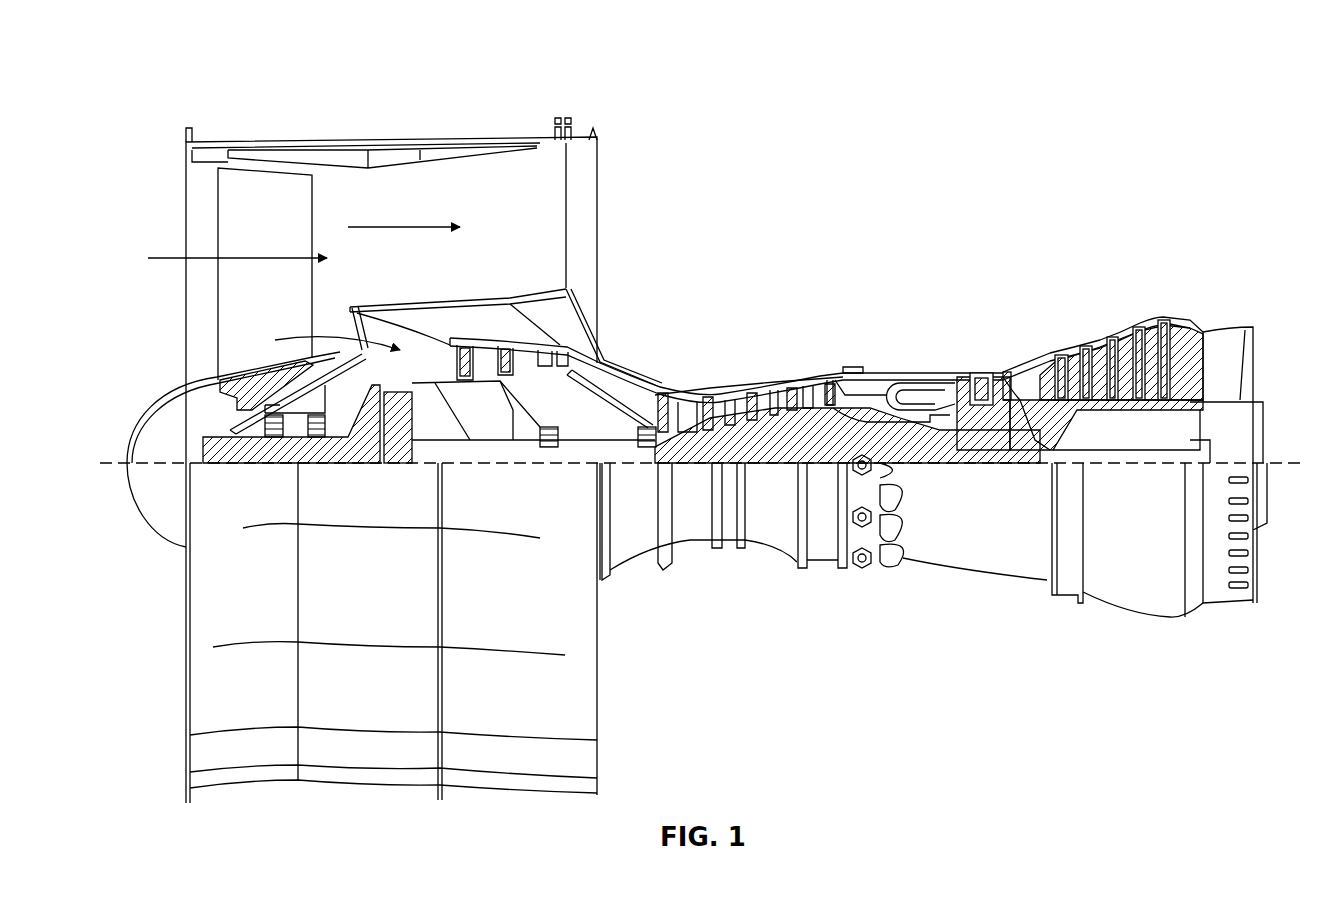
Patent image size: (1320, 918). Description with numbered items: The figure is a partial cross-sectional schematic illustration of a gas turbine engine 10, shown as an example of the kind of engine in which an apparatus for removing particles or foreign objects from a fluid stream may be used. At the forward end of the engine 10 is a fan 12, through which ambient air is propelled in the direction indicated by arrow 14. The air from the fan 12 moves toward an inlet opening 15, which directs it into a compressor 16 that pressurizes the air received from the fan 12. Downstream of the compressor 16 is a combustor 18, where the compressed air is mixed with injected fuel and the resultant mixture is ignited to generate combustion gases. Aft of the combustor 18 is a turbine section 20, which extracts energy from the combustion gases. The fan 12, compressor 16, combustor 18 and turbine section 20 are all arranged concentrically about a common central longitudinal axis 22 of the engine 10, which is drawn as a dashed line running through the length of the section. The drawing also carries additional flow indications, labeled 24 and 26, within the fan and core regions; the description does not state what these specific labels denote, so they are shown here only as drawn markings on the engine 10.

The gas turbine engine 10 is at (1222, 86).
The fan 12 is at (185, 102).
The arrow 14 is at (170, 257).
The inlet opening 15 is at (357, 312).
The compressor 16 is at (885, 102).
The combustor 18 is at (955, 102).
The turbine section 20 is at (955, 102).
The common central longitudinal axis 22 is at (1303, 462).
The bypass airflow 24 is at (405, 226).
The core airflow 26 is at (293, 338).